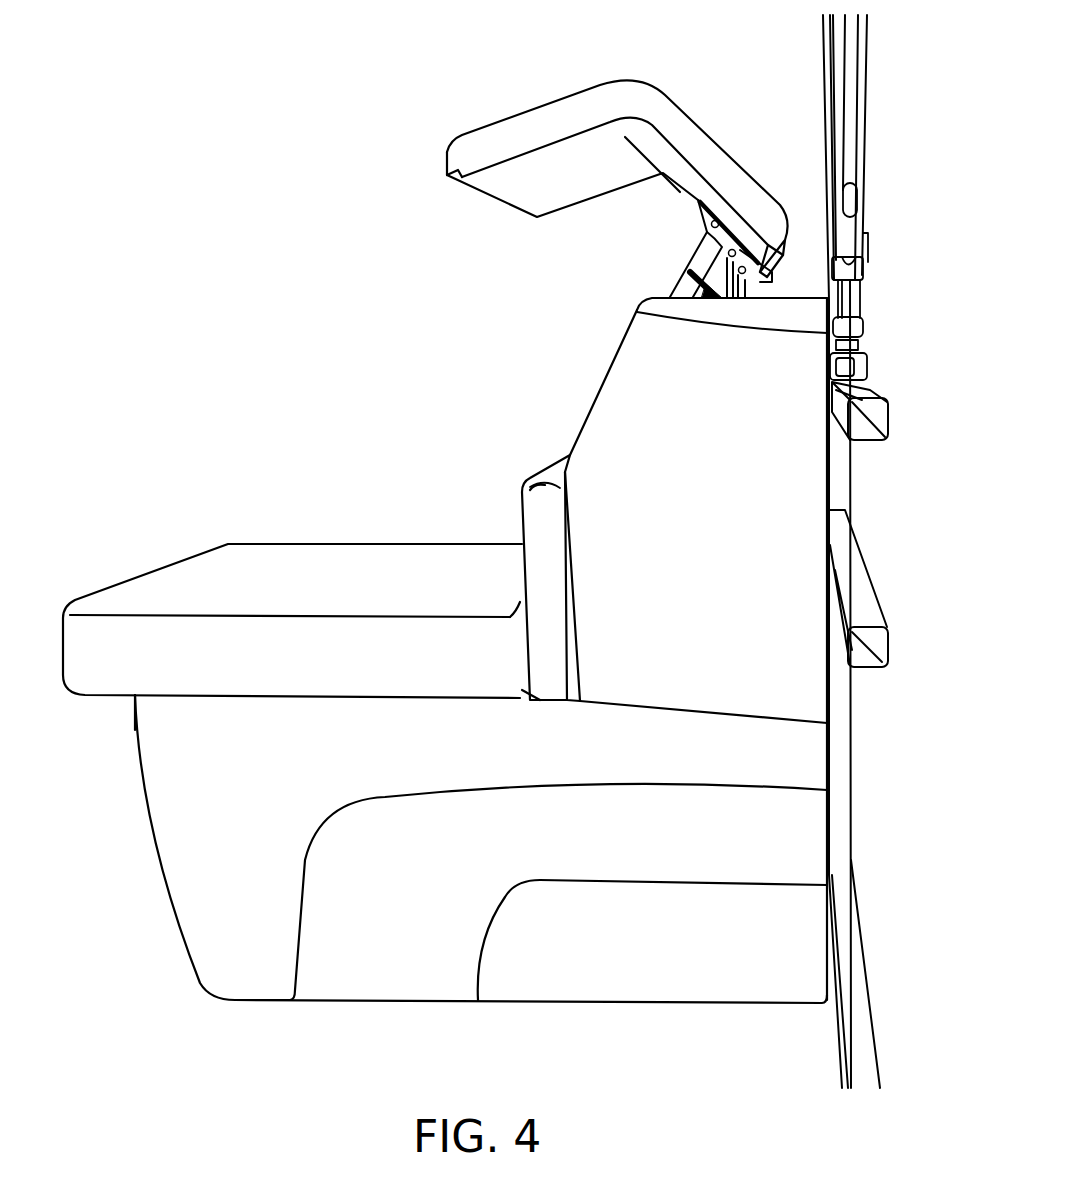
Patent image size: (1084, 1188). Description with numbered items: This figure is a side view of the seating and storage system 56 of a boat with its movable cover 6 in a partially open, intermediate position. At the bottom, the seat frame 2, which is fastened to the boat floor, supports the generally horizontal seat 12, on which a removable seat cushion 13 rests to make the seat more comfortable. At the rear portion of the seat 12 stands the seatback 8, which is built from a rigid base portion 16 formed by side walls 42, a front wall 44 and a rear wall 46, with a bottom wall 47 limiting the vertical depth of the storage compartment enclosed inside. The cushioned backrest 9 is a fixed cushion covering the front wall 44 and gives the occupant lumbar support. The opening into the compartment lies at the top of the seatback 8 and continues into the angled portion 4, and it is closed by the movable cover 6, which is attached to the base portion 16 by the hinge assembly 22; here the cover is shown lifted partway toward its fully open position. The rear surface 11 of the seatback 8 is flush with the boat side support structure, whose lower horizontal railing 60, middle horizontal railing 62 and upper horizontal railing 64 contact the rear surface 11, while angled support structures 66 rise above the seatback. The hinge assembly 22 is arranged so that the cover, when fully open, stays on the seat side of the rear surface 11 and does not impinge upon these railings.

The seat frame 2 is at (350, 867).
The angled portion 4 is at (585, 417).
The movable cover 6 is at (597, 100).
The seatback 8 is at (512, 478).
The cushioned backrest 9 is at (537, 522).
The rear surface 11 is at (830, 467).
The seat 12 is at (193, 695).
The seat cushion 13 is at (313, 562).
The base portion 16 is at (685, 425).
The hinge assembly 22 is at (697, 255).
The side walls 42 is at (650, 349).
The front wall 44 is at (563, 507).
The rear wall 46 is at (685, 325).
The bottom wall 47 is at (777, 723).
The seating and storage system 56 is at (272, 260).
The lower horizontal railing 60 is at (862, 1032).
The middle horizontal railing 62 is at (862, 614).
The upper horizontal railing 64 is at (860, 390).
The angled support structures 66 is at (848, 140).